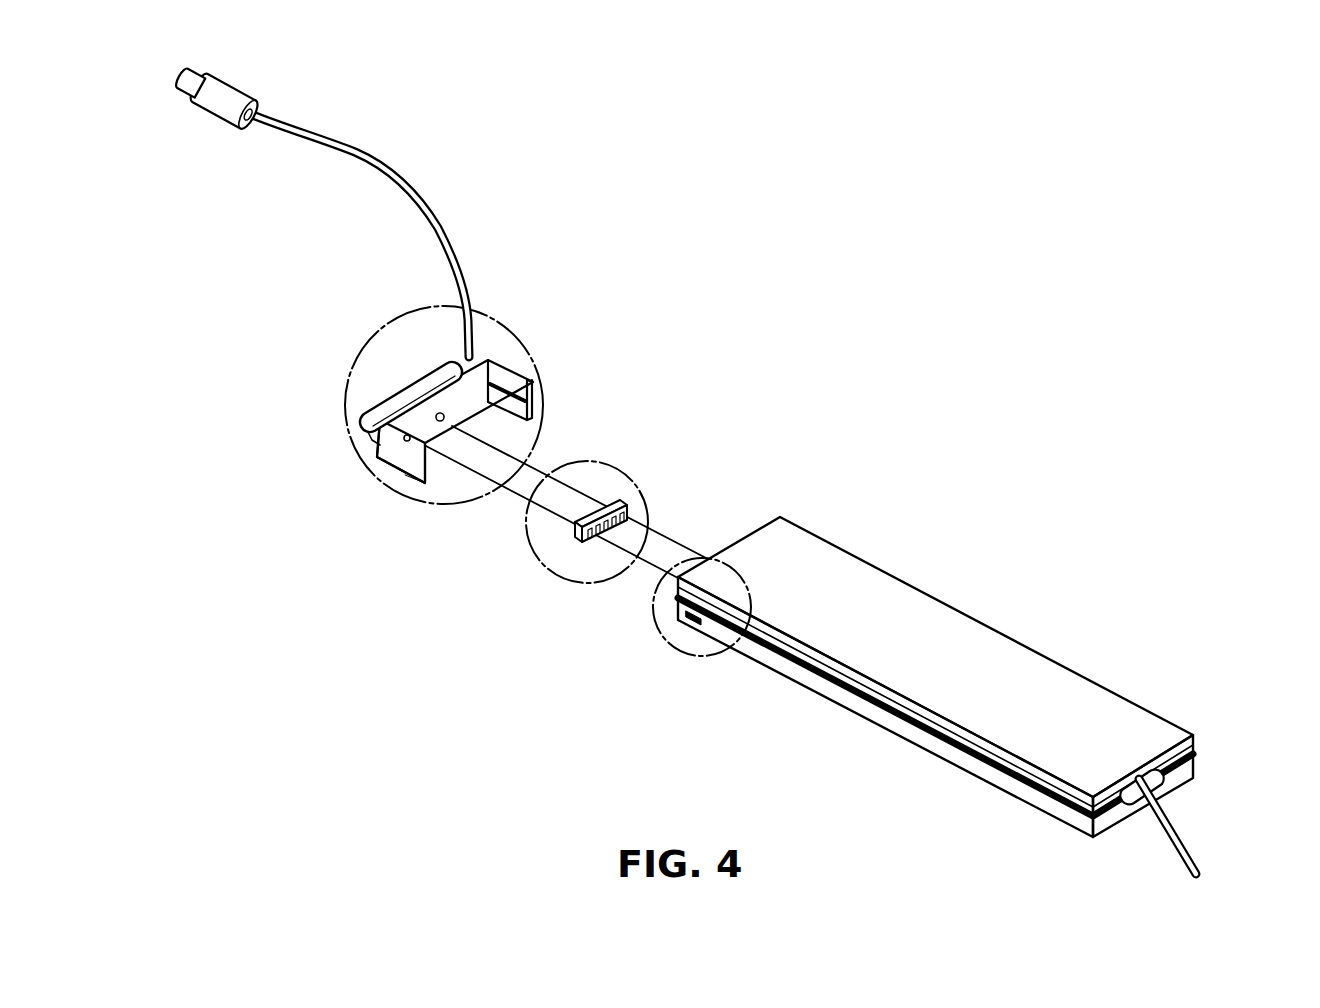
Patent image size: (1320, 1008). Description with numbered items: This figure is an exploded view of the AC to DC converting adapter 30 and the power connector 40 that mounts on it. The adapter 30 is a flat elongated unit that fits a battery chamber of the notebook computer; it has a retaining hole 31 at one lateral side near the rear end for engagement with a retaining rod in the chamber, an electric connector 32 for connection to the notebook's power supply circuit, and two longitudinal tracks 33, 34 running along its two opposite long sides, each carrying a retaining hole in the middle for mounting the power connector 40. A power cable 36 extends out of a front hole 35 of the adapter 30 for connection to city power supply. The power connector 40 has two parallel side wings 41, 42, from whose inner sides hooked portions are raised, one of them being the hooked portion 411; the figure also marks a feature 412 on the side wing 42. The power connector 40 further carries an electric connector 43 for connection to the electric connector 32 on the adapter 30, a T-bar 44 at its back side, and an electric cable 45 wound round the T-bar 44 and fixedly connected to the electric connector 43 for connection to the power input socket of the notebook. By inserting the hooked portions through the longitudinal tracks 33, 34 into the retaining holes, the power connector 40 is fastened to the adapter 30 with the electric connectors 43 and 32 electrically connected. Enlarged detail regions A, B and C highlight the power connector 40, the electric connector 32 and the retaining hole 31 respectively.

The AC to DC converting adapter 30 is at (1035, 670).
The retaining hole 31 is at (698, 627).
The electric connector 32 is at (630, 505).
The longitudinal track 33 is at (905, 718).
The longitudinal track 34 is at (1200, 760).
The front hole 35 is at (1167, 787).
The power cable 36 is at (1168, 846).
The power connector 40 is at (482, 350).
The side wing 41 is at (507, 353).
The hooked portion 411 is at (527, 403).
The bottom plate 412 is at (432, 480).
The side wing 42 is at (377, 440).
The electric connector 43 is at (400, 382).
The T-bar 44 is at (412, 357).
The electric cable 45 is at (355, 157).
The detail region A is at (537, 363).
The detail region B is at (545, 565).
The detail region C is at (655, 625).